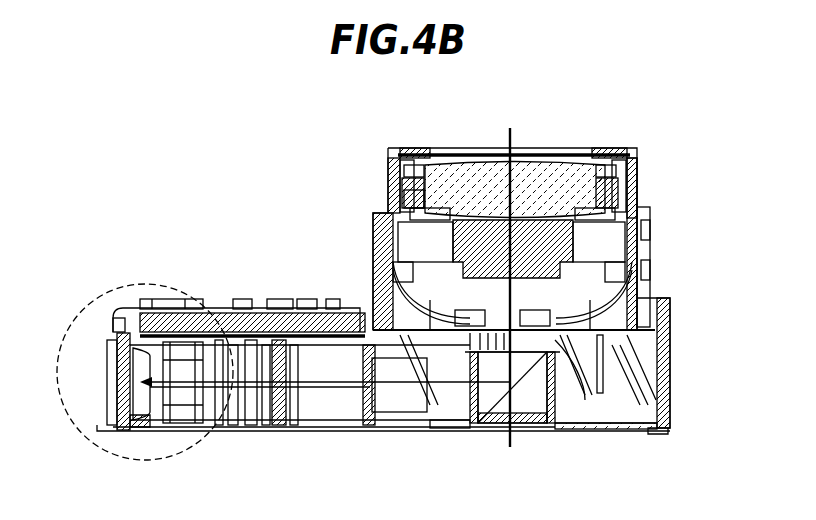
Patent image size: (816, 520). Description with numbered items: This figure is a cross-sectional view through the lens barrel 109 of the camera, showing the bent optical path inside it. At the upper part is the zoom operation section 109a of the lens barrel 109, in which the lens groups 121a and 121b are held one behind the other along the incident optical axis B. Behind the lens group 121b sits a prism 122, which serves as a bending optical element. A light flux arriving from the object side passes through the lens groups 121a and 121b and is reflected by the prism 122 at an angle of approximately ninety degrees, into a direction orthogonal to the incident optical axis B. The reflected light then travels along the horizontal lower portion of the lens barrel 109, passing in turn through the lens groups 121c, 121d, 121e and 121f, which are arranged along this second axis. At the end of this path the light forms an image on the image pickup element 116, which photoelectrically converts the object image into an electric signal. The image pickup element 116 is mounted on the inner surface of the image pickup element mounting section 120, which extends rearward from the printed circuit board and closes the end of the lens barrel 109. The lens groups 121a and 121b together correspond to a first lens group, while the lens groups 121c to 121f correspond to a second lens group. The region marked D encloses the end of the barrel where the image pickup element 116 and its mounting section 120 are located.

The lens barrel 109 is at (236, 165).
The zoom operation section 109a is at (630, 192).
The lens group 121a is at (560, 178).
The lens group 121b is at (405, 200).
The lens group 121c is at (447, 427).
The lens group 121d is at (313, 336).
The lens group 121e is at (272, 345).
The lens group 121f is at (200, 333).
The prism 122 is at (512, 433).
The image pickup element mounting section 120 is at (112, 385).
The image pickup element 116 is at (140, 432).
The incident optical axis B is at (513, 142).
The detail region D is at (68, 335).